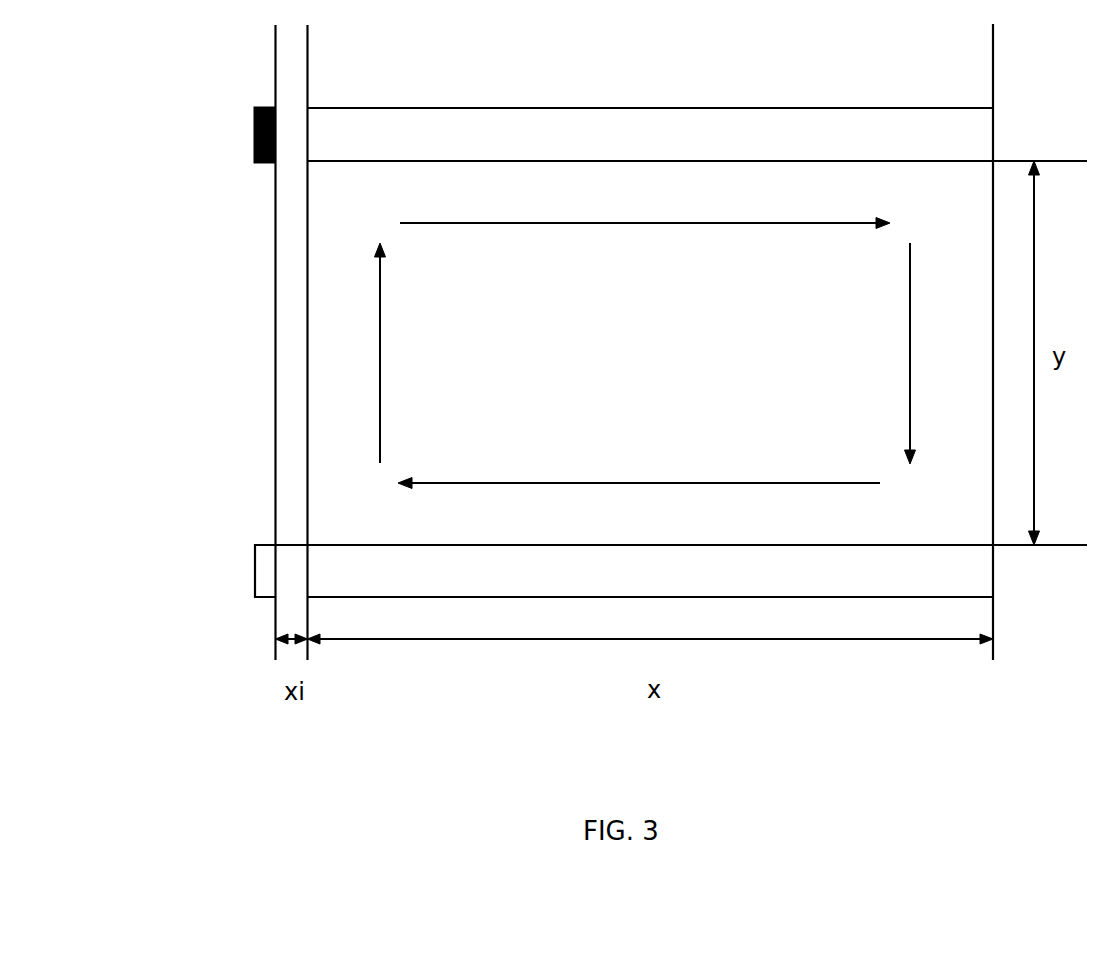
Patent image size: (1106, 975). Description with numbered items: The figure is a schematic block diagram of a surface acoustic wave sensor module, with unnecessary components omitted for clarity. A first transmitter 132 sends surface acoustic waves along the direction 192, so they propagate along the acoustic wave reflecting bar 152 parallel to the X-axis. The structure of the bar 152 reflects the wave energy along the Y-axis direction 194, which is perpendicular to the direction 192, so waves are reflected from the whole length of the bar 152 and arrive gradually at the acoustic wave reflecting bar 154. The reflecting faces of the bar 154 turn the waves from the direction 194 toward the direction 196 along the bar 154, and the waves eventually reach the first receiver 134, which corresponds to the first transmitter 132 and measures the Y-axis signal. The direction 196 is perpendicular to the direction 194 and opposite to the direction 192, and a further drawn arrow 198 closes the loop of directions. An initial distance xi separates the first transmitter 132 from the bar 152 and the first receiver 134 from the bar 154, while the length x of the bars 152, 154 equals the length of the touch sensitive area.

The first transmitter 132 is at (254, 135).
The first receiver 134 is at (255, 545).
The acoustic wave reflecting bar 152 is at (682, 152).
The acoustic wave reflecting bar 154 is at (682, 588).
The direction 192 is at (645, 244).
The Y-axis direction 194 is at (885, 353).
The direction 196 is at (639, 465).
The fourth direction arrow 198 is at (419, 353).